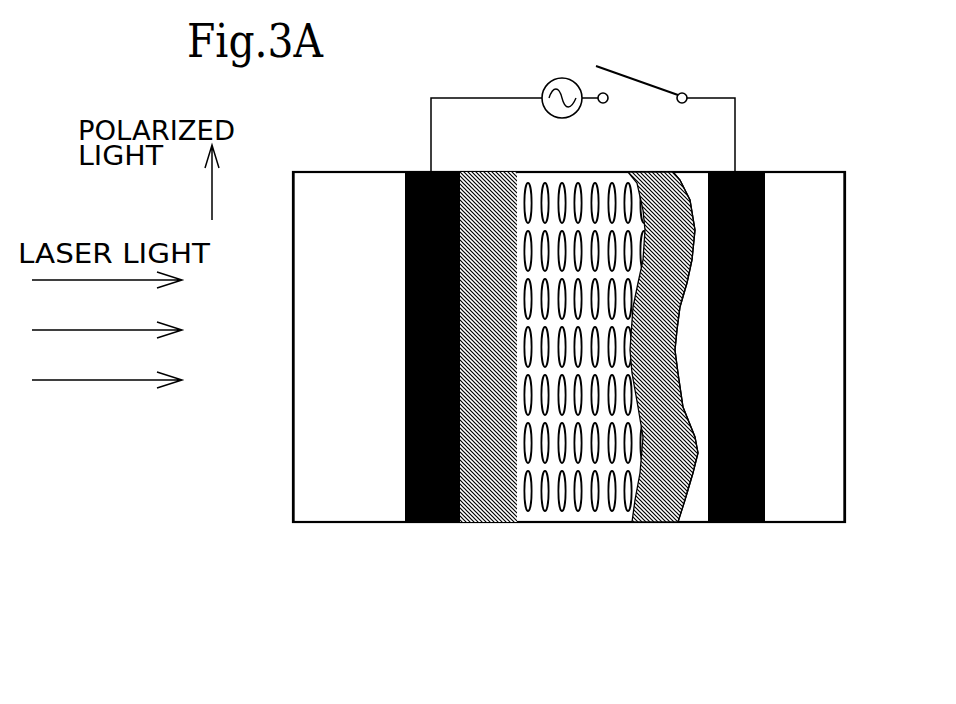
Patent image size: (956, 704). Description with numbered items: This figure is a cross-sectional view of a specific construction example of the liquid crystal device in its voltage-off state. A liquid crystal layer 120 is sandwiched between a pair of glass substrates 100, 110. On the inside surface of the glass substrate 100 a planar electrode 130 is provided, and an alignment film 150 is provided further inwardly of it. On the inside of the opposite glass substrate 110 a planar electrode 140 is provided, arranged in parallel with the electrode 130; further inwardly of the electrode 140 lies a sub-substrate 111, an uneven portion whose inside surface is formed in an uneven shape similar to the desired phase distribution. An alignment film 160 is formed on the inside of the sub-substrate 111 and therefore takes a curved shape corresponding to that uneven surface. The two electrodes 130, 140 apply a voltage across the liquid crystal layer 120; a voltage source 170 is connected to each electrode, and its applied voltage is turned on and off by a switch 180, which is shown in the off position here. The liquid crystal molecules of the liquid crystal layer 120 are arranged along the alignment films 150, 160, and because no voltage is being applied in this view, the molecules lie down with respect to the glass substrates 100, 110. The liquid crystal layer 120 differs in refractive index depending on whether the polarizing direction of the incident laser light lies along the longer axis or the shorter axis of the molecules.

The glass substrate 100 is at (323, 183).
The glass substrate 110 is at (815, 180).
The sub-substrate 111 is at (695, 510).
The liquid crystal layer 120 is at (607, 510).
The electrode 130 is at (425, 522).
The electrode 140 is at (747, 522).
The alignment film 150 is at (481, 171).
The alignment film 160 is at (648, 171).
The voltage source 170 is at (552, 80).
The switch 180 is at (608, 63).